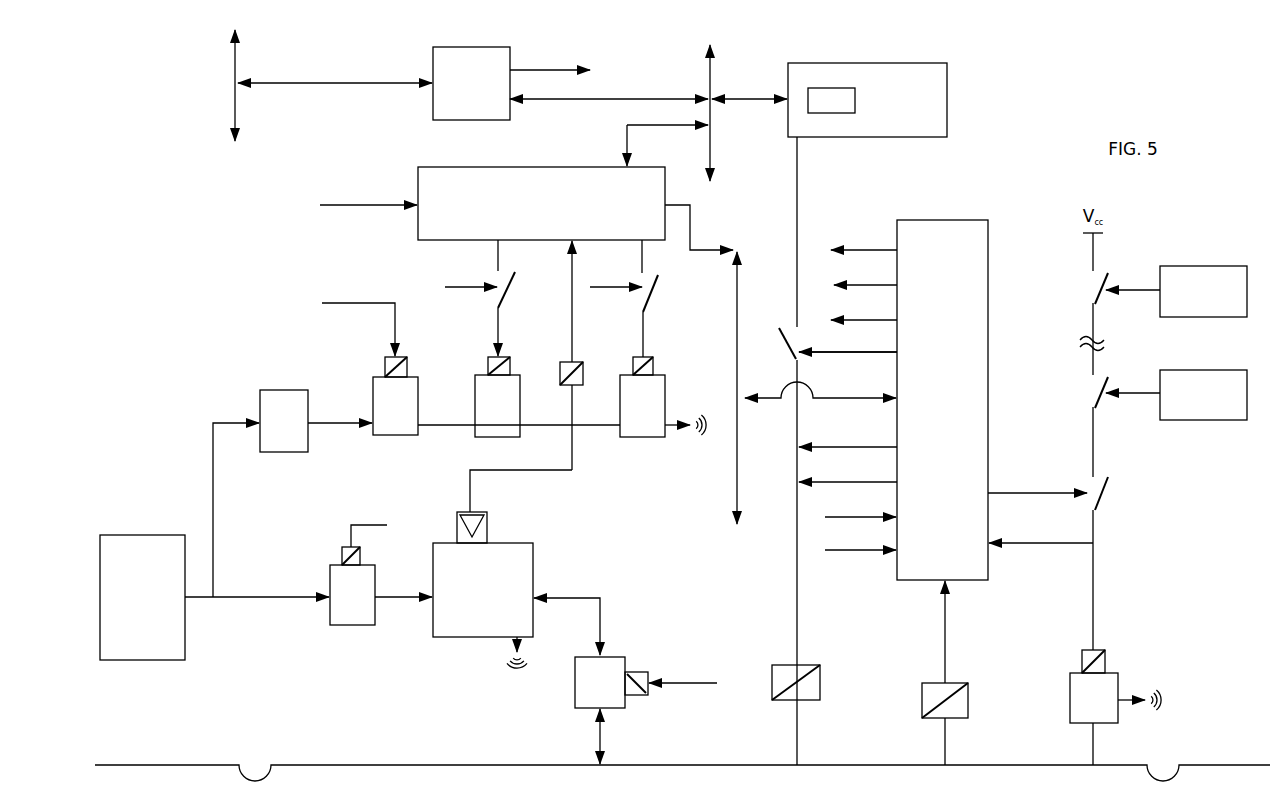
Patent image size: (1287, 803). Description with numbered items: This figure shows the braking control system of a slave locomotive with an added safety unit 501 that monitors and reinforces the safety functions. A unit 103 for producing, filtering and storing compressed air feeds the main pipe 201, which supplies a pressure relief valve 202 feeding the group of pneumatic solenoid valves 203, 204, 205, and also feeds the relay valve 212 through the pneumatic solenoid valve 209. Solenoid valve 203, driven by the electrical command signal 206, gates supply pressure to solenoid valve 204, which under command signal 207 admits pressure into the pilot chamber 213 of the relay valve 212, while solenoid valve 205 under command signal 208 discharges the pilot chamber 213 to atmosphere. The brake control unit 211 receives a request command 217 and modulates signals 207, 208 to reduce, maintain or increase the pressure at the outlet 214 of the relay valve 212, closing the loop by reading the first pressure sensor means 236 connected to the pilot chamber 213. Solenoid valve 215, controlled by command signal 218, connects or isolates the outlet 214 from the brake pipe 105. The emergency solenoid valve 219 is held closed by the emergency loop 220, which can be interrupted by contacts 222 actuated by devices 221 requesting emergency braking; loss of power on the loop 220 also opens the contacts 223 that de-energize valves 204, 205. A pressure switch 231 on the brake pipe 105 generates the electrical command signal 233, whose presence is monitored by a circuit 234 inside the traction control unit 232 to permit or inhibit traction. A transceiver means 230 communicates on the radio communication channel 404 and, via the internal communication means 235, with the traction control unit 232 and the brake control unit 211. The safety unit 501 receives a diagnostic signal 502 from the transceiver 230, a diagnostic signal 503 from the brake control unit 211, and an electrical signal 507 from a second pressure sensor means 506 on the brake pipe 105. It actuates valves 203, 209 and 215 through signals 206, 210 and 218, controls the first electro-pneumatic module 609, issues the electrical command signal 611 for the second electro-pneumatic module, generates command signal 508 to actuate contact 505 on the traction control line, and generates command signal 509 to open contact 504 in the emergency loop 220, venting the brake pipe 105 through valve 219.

The unit for producing, filtering and storing compressed air 103 is at (163, 543).
The brake pipe 105 is at (310, 762).
The main pipe 201 is at (270, 600).
The pressure relief valve 202 is at (285, 393).
The pneumatic solenoid valve 203 is at (400, 432).
The pneumatic solenoid valve 204 is at (480, 437).
The pneumatic solenoid valve 205 is at (645, 441).
The electrical command signal 206 is at (345, 301).
The electrical command signal 207 is at (496, 256).
The electrical command signal 208 is at (642, 262).
The pneumatic solenoid valve 209 is at (358, 623).
The electrical command signal 210 is at (350, 526).
The brake control unit 211 is at (445, 172).
The relay valve 212 is at (470, 636).
The pilot chamber 213 is at (490, 532).
The outlet of the relay valve 214 is at (602, 619).
The pneumatic solenoid valve 215 is at (585, 691).
The request command 217 is at (357, 201).
The electrical command signal 218 is at (693, 682).
The pneumatic solenoid valve 219 is at (1075, 698).
The emergency loop 220 is at (445, 288).
The devices 221 is at (1198, 262).
The contacts 222 is at (1100, 293).
The contacts 223 is at (514, 273).
The transceiver means 230 is at (455, 66).
The pressure switch 231 is at (775, 686).
The traction control unit 232 is at (902, 82).
The electrical command signal 233 is at (795, 620).
The circuit 234 is at (826, 96).
The internal communication means 235 is at (606, 104).
The first pressure sensor means 236 is at (558, 376).
The radio communication channel 404 is at (186, 85).
The safety unit 501 is at (930, 214).
The diagnostic signal 502 is at (545, 68).
The diagnostic signal 503 is at (714, 247).
The contact 504 is at (1110, 492).
The contact 505 is at (790, 326).
The second pressure sensor means 506 is at (921, 700).
The electrical signal 507 is at (942, 662).
The command signal 508 is at (835, 352).
The command signal 509 is at (1068, 490).
The first electro-pneumatic module 609 is at (870, 444).
The electrical command signal 611 is at (838, 480).